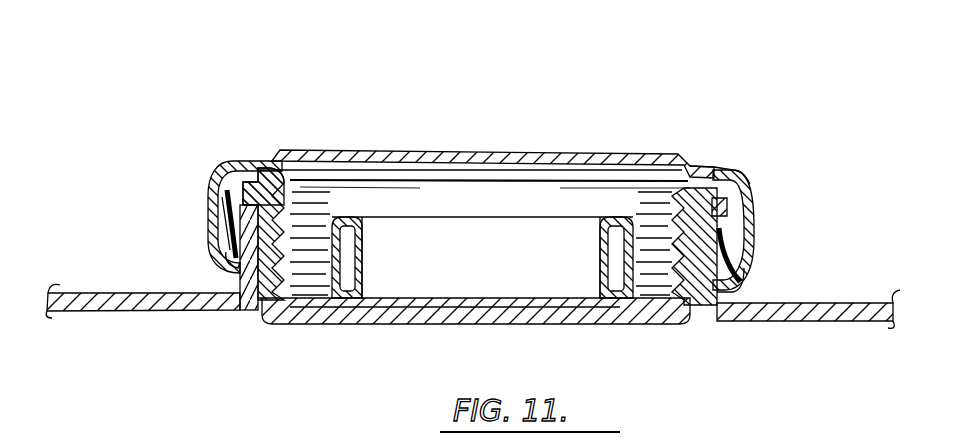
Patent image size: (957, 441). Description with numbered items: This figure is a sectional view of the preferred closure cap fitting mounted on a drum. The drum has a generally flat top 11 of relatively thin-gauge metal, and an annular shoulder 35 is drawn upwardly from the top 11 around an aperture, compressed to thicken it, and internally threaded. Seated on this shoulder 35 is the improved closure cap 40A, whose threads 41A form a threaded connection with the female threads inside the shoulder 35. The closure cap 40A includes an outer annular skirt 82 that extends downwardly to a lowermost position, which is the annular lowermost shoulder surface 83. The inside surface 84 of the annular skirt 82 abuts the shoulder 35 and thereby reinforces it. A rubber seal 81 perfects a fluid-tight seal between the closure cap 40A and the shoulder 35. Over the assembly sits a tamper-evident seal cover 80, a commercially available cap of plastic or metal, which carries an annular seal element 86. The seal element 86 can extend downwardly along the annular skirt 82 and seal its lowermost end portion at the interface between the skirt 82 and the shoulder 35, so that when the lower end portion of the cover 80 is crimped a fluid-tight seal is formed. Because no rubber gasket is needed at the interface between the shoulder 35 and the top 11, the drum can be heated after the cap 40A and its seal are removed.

The top 11 is at (153, 317).
The annular shoulder 35 is at (250, 278).
The closure cap 40A is at (283, 196).
The threads 41A is at (350, 254).
The tamper-evident seal cover 80 is at (617, 156).
The rubber seal 81 is at (253, 192).
The outer annular skirt 82 is at (230, 236).
The annular lowermost shoulder surface 83 is at (233, 262).
The inside surface 84 is at (217, 223).
The seal element 86 is at (742, 171).